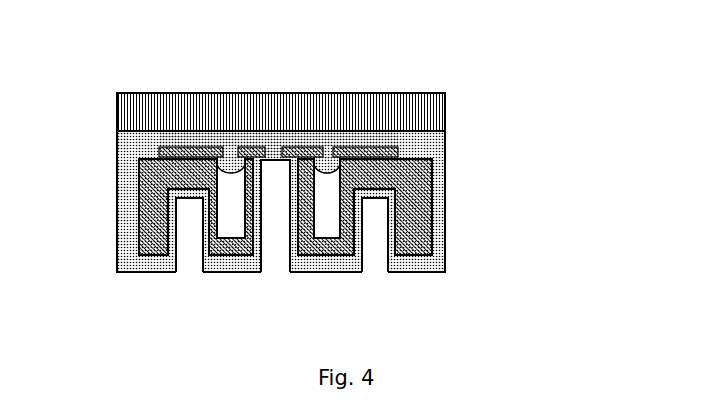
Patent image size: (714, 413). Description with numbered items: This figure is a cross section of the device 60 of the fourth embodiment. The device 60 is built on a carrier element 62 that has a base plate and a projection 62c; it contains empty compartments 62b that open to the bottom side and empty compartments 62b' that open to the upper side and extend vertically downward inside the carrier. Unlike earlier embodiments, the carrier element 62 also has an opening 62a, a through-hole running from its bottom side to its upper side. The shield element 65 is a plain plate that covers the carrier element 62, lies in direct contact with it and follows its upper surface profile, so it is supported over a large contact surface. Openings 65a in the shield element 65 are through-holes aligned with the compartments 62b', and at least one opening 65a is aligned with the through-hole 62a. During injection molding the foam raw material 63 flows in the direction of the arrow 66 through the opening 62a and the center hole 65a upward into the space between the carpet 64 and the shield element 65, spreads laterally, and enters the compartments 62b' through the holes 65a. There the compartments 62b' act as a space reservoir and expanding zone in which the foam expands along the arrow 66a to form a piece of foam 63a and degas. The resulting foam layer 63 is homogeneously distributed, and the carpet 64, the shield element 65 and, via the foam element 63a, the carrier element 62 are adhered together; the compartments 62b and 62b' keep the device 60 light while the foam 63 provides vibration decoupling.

The device 60 is at (562, 181).
The carrier element 62 is at (432, 213).
The opening 62a is at (262, 240).
The empty compartments 62b is at (376, 265).
The empty compartments 62b' is at (189, 198).
The projection 62c is at (220, 257).
The foam raw material 63 is at (444, 143).
The piece of foam 63a is at (217, 173).
The carpet 64 is at (446, 95).
The shield element 65 is at (182, 147).
The openings 65a is at (323, 147).
The arrow 66 is at (273, 146).
The arrow 66a is at (212, 140).